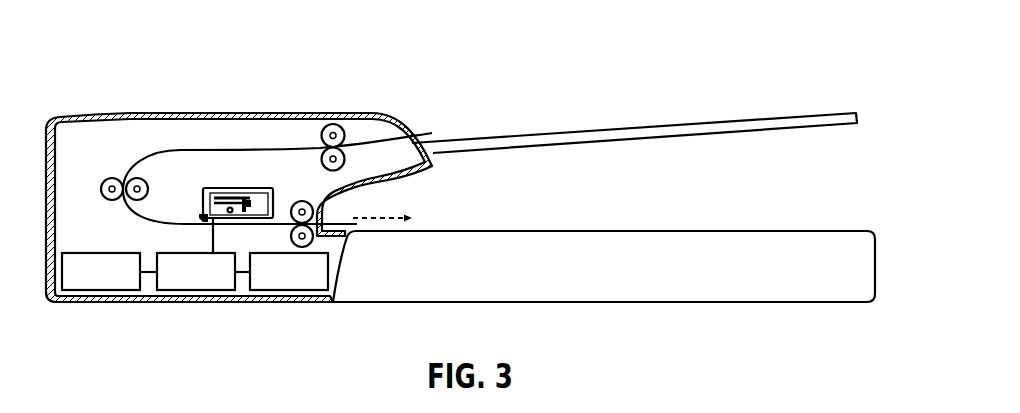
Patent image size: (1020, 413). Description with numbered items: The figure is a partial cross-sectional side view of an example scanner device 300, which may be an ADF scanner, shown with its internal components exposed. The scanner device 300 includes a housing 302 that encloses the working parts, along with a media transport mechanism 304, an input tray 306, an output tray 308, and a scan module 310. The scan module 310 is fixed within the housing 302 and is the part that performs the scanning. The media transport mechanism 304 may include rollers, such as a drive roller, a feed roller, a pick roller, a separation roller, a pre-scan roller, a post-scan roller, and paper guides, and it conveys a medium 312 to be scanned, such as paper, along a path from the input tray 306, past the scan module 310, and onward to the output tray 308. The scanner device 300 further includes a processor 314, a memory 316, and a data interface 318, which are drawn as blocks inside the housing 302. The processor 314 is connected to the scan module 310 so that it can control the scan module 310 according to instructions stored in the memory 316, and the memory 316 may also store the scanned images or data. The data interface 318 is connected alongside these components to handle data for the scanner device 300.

The scanner device 300 is at (210, 72).
The housing 302 is at (653, 290).
The media transport mechanism 304 is at (322, 123).
The input tray 306 is at (718, 95).
The output tray 308 is at (446, 213).
The scan module 310 is at (223, 174).
The medium 312 is at (275, 147).
The processor 314 is at (216, 284).
The memory 316 is at (309, 284).
The data interface 318 is at (121, 284).